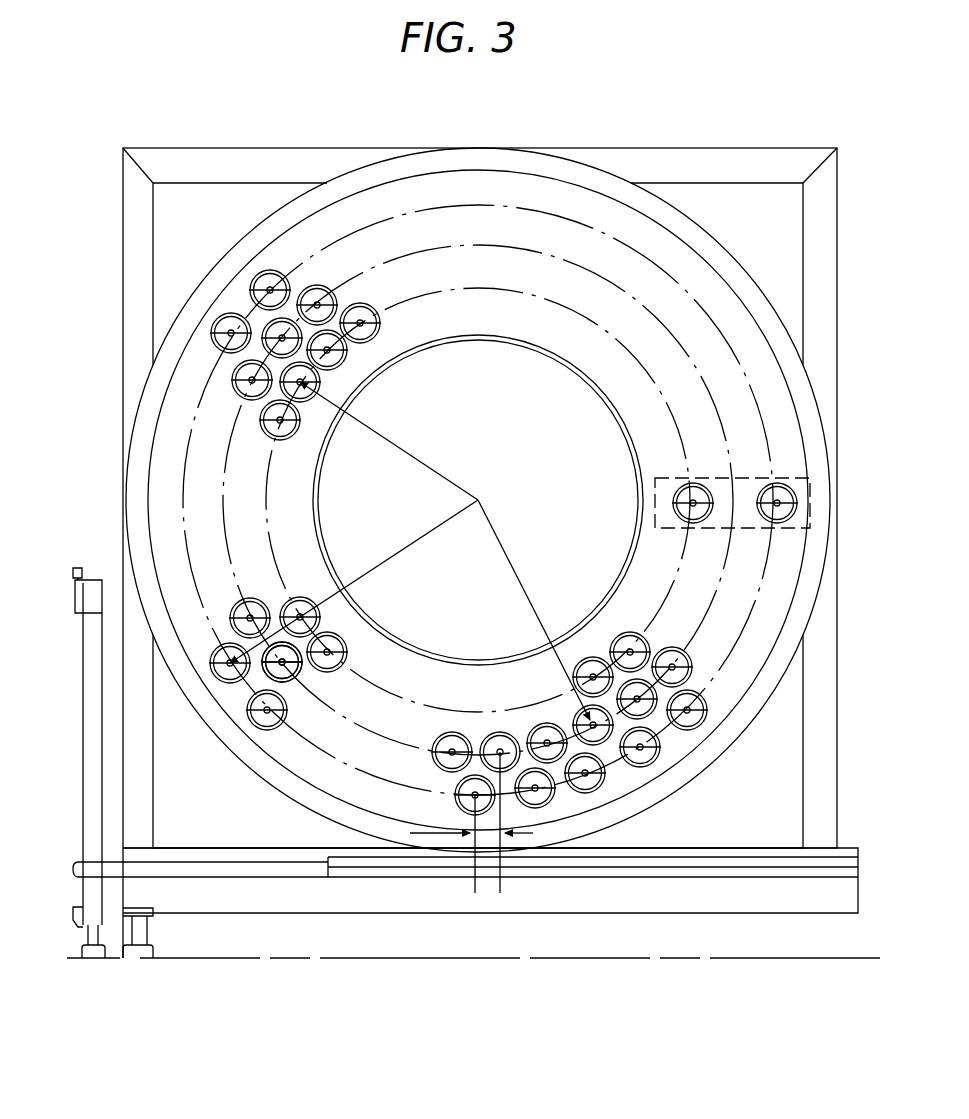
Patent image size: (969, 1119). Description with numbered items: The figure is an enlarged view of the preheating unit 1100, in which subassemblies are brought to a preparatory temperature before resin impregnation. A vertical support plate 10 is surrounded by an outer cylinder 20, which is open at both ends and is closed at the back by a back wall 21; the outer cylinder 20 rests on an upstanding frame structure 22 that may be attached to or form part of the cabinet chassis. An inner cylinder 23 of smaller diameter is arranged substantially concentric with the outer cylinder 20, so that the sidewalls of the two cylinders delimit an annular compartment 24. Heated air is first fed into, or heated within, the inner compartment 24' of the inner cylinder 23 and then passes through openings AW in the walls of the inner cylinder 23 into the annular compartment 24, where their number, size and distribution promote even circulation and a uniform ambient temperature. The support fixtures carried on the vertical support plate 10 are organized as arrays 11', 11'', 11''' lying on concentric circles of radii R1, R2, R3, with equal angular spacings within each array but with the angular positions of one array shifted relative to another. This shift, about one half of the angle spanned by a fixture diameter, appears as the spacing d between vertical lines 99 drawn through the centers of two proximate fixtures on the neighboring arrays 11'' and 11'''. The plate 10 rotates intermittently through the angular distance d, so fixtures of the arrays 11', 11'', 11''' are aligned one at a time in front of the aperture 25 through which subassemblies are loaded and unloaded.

The preheating unit 1100 is at (693, 137).
The vertical support plate 10 is at (700, 267).
The outer cylinder 20 is at (430, 157).
The back wall 21 is at (195, 232).
The frame structure 22 is at (358, 900).
The inner cylinder 23 is at (372, 387).
The annular compartment 24 is at (478, 457).
The inner cylinder compartment 24' is at (522, 395).
The aperture 25 is at (785, 477).
The vertical lines 99 is at (475, 893).
The first array of support fixtures 11' is at (349, 652).
The second array of support fixtures 11'' is at (324, 682).
The third array of support fixtures 11''' is at (298, 717).
The first radius R1 is at (400, 455).
The second radius R2 is at (518, 580).
The third radius R3 is at (388, 565).
The openings AW is at (447, 322).
The angular spacing d is at (437, 830).